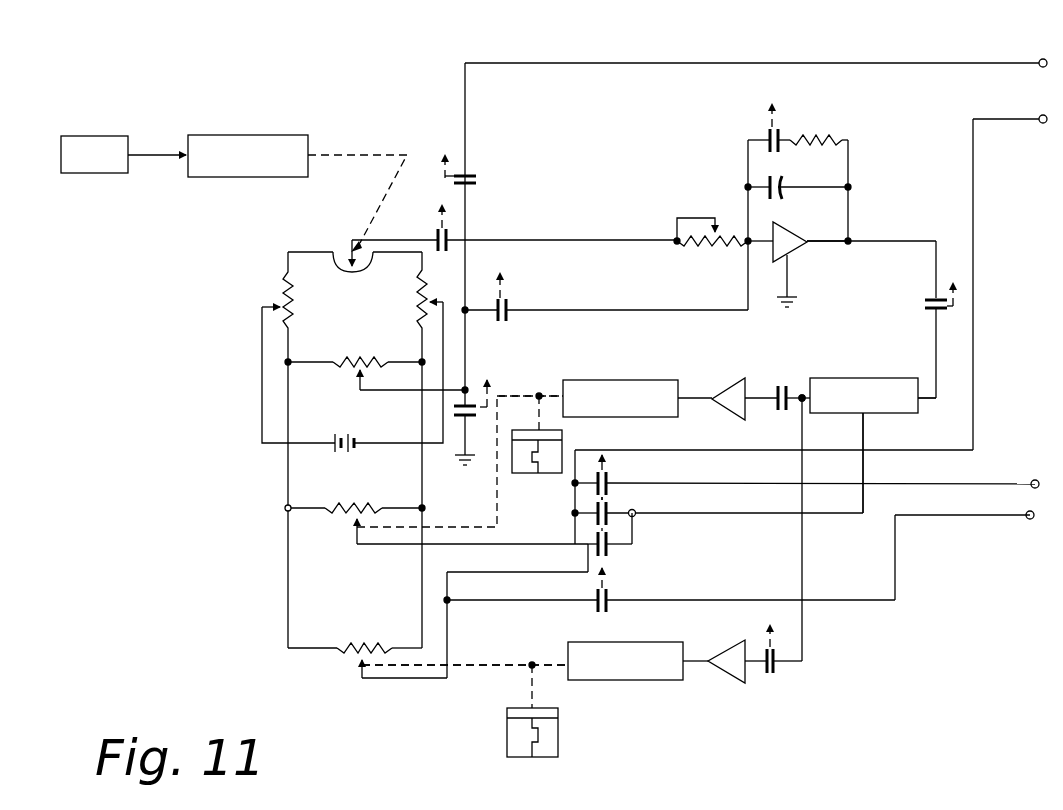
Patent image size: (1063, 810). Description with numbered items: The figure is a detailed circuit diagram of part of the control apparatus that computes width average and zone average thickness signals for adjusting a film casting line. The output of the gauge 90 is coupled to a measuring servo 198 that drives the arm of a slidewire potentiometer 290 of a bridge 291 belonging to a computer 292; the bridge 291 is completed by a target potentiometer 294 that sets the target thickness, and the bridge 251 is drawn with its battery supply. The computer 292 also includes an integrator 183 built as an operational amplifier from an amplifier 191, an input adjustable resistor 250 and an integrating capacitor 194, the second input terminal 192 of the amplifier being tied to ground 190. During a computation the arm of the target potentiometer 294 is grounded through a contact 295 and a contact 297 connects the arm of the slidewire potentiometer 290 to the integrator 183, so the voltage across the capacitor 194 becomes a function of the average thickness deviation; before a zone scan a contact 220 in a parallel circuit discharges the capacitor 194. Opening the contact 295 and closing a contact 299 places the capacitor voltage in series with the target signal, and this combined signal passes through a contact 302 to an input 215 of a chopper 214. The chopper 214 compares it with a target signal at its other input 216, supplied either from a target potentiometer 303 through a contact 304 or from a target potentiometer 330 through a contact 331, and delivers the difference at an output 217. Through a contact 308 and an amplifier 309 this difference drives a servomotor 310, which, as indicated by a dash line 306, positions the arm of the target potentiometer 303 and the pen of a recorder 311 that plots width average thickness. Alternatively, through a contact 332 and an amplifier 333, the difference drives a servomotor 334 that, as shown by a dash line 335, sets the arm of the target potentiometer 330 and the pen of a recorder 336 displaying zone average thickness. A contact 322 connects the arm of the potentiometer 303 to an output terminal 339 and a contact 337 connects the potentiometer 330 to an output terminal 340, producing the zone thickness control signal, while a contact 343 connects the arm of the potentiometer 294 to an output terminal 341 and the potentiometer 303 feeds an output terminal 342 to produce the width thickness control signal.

The gauge 90 is at (94, 136).
The measuring servo 198 is at (240, 134).
The contact 343 is at (470, 176).
The contact 297 is at (436, 236).
The slidewire potentiometer 290 is at (343, 250).
The bridge 291 is at (305, 290).
The target potentiometer 294 is at (355, 380).
The contact 295 is at (470, 408).
The contact 299 is at (508, 305).
The ground 190 is at (456, 456).
The computer 292 is at (600, 344).
The dash line 306 is at (540, 395).
The servomotor 310 is at (665, 368).
The amplifier 309 is at (735, 372).
The contact 308 is at (775, 388).
The chopper output 217 is at (802, 396).
The chopper input 215 is at (928, 394).
The chopper 214 is at (915, 413).
The chopper input 216 is at (864, 433).
The contact 302 is at (925, 303).
The input adjustable resistor 250 is at (715, 248).
The contact 220 is at (781, 134).
The capacitor 194 is at (785, 186).
The integrator 183 is at (807, 232).
The amplifier 191 is at (805, 245).
The input terminal 192 is at (790, 280).
The output terminal 341 is at (1044, 60).
The output terminal 342 is at (1047, 122).
The output terminal 339 is at (1046, 470).
The output terminal 340 is at (1034, 518).
The contact 322 is at (612, 478).
The contact 304 is at (612, 508).
The contact 331 is at (612, 549).
The contact 337 is at (612, 596).
The recorder 311 is at (527, 466).
The target potentiometer 303 is at (350, 518).
The bridge circuit 251 is at (258, 687).
The target potentiometer 330 is at (352, 660).
The dash line 335 is at (549, 668).
The servomotor 334 is at (660, 643).
The amplifier 333 is at (728, 645).
The contact 332 is at (777, 667).
The recorder 336 is at (560, 740).